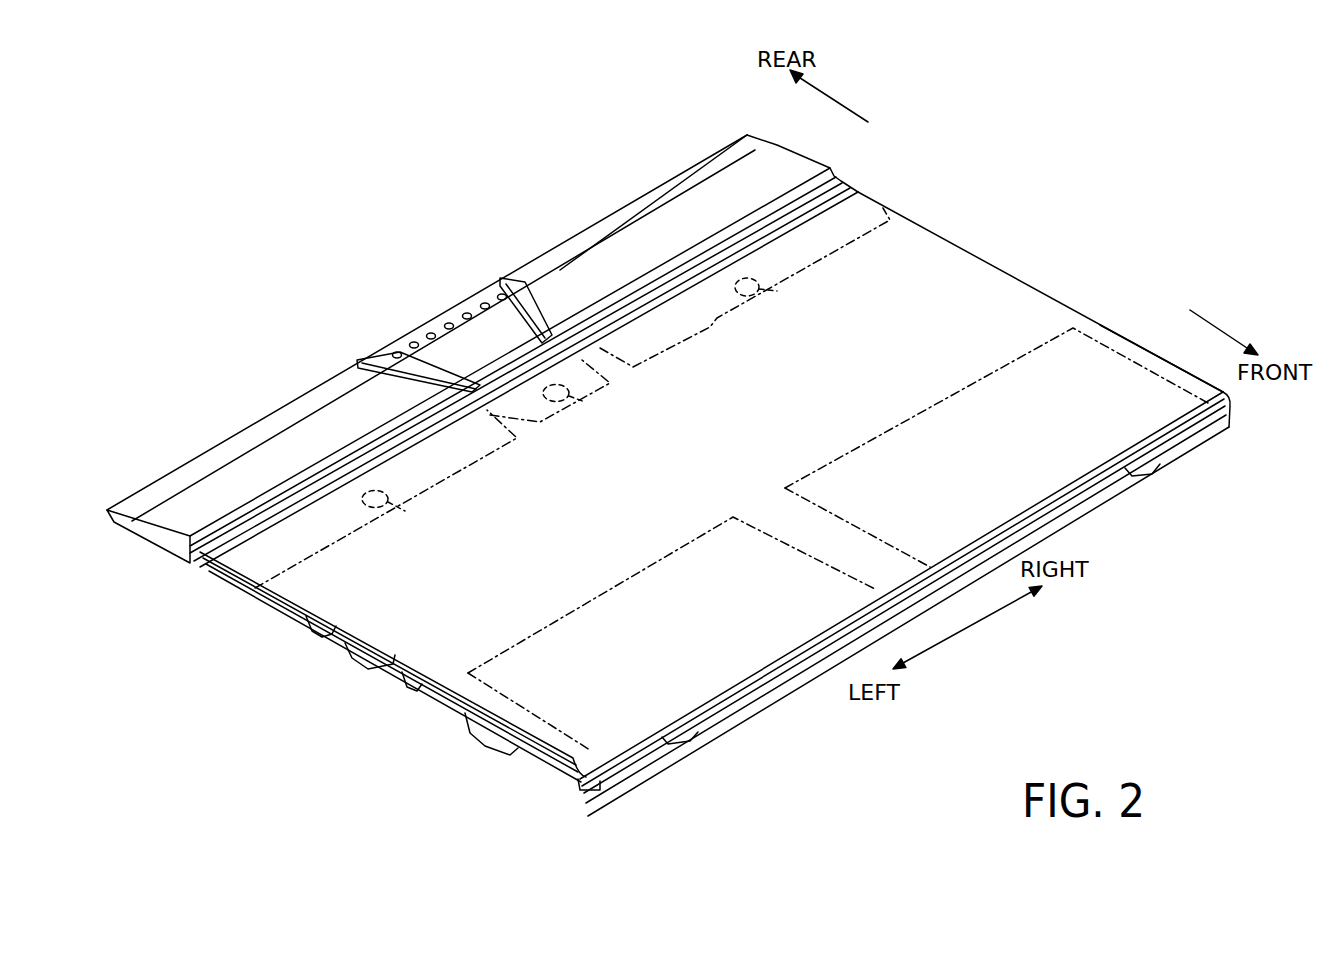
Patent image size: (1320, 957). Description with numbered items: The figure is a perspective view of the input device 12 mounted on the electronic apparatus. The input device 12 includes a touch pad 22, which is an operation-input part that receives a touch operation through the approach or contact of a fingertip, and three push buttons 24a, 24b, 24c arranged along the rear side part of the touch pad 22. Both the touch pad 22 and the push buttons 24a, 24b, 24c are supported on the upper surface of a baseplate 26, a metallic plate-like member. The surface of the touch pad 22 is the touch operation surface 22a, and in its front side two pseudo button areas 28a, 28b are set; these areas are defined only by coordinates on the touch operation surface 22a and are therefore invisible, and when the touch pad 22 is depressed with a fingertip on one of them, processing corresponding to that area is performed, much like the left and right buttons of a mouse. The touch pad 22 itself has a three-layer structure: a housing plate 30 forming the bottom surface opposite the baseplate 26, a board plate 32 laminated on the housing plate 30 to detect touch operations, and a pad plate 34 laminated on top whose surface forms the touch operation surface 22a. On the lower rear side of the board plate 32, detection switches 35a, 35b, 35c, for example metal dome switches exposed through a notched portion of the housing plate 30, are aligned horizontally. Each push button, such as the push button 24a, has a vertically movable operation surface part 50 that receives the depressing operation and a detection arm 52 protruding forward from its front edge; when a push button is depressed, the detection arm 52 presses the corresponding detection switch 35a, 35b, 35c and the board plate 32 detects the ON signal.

The input device 12 is at (688, 471).
The touch pad 22 is at (740, 488).
The touch operation surface 22a is at (917, 260).
The push button 24a is at (263, 464).
The push button 24b is at (434, 314).
The push button 24c is at (594, 234).
The baseplate 26 is at (343, 655).
The pseudo button area 28a is at (743, 700).
The pseudo button area 28b is at (1193, 432).
The housing plate 30 is at (530, 753).
The board plate 32 is at (437, 703).
The pad plate 34 is at (393, 648).
The detection switch 35a is at (405, 510).
The detection switch 35b is at (585, 400).
The detection switch 35c is at (777, 293).
The operation surface part 50 is at (665, 222).
The detection arm 52 is at (712, 327).